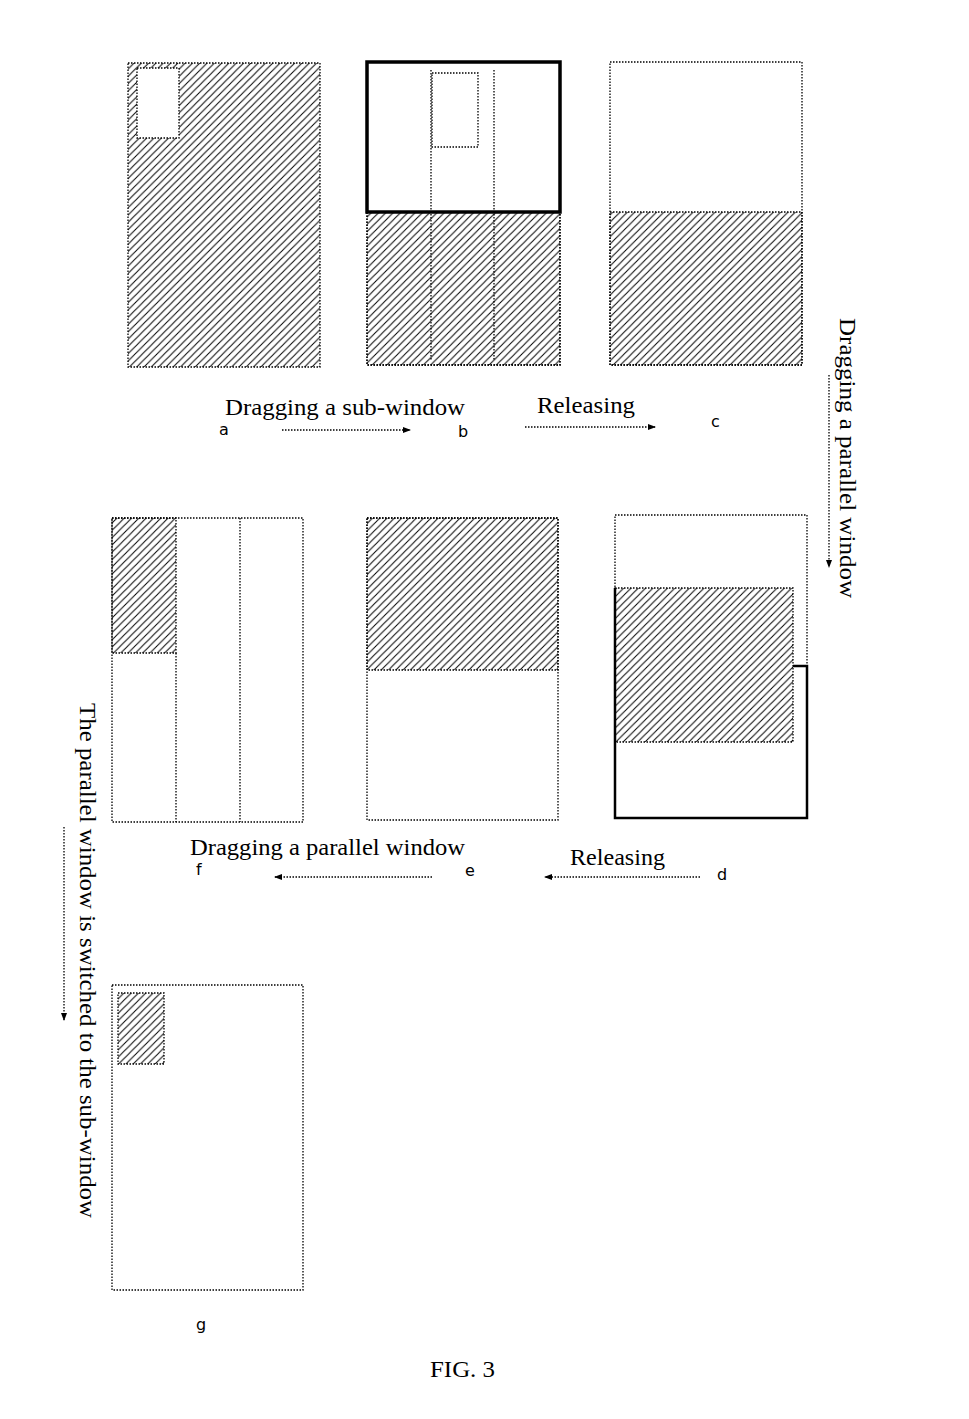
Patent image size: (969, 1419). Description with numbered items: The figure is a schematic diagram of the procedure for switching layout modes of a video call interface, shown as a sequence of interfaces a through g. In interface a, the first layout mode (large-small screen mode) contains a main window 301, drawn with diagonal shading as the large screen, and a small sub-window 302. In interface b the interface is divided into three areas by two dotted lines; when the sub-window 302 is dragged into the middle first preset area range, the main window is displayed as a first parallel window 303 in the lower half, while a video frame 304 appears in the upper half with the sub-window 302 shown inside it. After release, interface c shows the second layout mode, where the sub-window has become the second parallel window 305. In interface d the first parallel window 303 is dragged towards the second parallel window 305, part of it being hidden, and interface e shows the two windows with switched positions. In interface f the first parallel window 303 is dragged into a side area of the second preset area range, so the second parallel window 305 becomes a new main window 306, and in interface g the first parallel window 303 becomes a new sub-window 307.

The main window 301 is at (265, 63).
The sub-window 302 is at (143, 63).
The first parallel window 303 is at (478, 366).
The video frame 304 is at (560, 115).
The second parallel window 305 is at (690, 75).
The new main window 306 is at (255, 520).
The new sub-window 307 is at (128, 990).